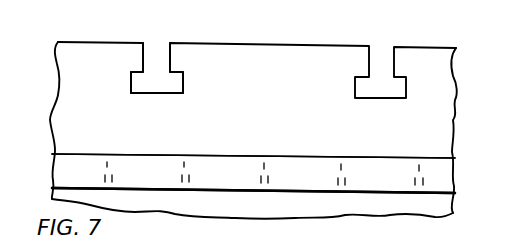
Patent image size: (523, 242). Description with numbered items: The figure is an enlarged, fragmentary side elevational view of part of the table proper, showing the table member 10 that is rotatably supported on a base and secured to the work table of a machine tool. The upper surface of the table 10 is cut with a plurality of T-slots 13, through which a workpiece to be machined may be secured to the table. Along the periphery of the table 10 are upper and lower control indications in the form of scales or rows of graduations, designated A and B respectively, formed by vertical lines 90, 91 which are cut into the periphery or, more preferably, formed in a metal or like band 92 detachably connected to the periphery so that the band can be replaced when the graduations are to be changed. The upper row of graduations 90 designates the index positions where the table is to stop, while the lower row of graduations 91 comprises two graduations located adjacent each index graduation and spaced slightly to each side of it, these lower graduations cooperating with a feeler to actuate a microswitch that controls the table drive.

The table member 10 is at (264, 46).
The T-slots 13 is at (152, 54).
The vertical lines of upper graduations 90 is at (184, 165).
The vertical lines of lower graduations 91 is at (191, 180).
The band 92 is at (453, 175).
The upper control indication scale A is at (266, 165).
The lower control indication scale B is at (271, 181).